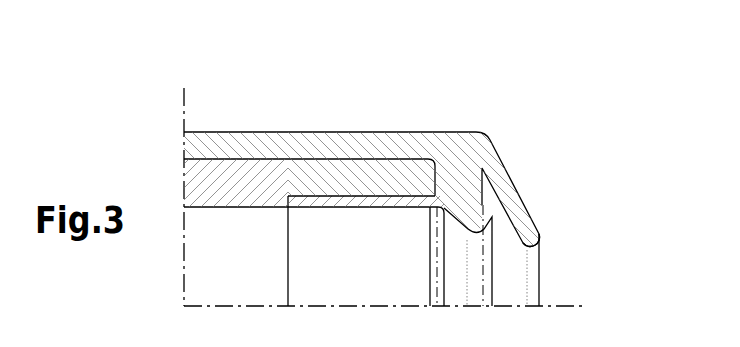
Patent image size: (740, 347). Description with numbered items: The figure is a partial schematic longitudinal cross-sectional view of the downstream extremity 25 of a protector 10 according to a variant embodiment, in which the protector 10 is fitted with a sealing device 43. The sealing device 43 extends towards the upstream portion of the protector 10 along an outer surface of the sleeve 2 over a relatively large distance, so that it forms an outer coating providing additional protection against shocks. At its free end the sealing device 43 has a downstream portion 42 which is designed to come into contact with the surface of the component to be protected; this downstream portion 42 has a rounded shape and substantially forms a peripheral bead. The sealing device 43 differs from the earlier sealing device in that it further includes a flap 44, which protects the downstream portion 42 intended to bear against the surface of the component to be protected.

The protector 10 is at (218, 112).
The sleeve 2 is at (237, 186).
The downstream extremity 25 is at (327, 177).
The sealing device 43 is at (455, 131).
The downstream portion 42 is at (478, 198).
The flap 44 is at (534, 233).